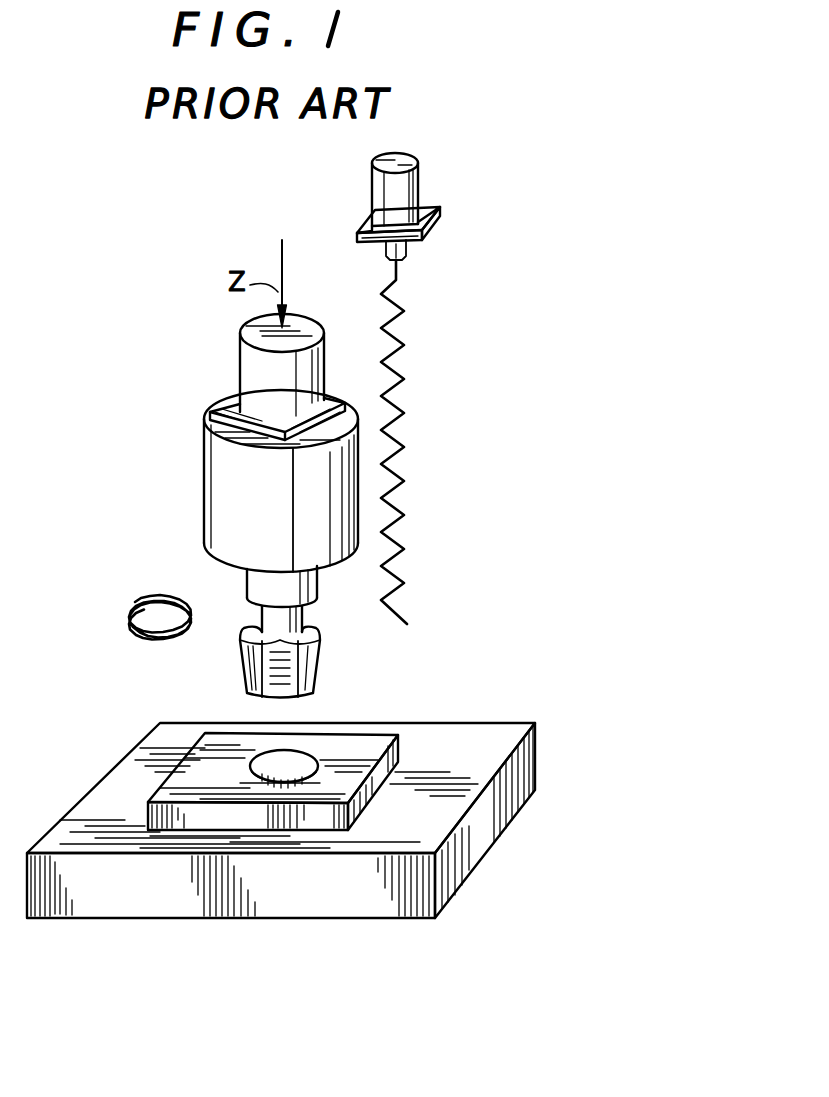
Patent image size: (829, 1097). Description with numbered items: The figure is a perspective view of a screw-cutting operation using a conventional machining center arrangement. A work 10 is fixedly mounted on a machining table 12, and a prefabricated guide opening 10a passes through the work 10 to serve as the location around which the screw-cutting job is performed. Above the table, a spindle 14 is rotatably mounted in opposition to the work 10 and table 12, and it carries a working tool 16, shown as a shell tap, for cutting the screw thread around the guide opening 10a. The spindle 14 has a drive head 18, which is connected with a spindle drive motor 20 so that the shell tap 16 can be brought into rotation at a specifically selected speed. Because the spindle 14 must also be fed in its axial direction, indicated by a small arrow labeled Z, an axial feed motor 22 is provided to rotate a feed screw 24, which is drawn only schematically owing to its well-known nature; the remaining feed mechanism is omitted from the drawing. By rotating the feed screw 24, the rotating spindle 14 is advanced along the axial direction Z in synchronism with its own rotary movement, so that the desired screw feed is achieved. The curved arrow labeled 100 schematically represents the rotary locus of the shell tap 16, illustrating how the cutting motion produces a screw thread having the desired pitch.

The work 10 is at (362, 745).
The prefabricated guide opening 10a is at (293, 770).
The machining table 12 is at (475, 745).
The spindle 14 is at (255, 584).
The working tool 16 is at (318, 660).
The drive head 18 is at (222, 500).
The spindle drive motor 20 is at (253, 385).
The axial feed motor 22 is at (405, 195).
The feed screw 24 is at (395, 316).
The rotary locus of shell tap 100 is at (148, 588).